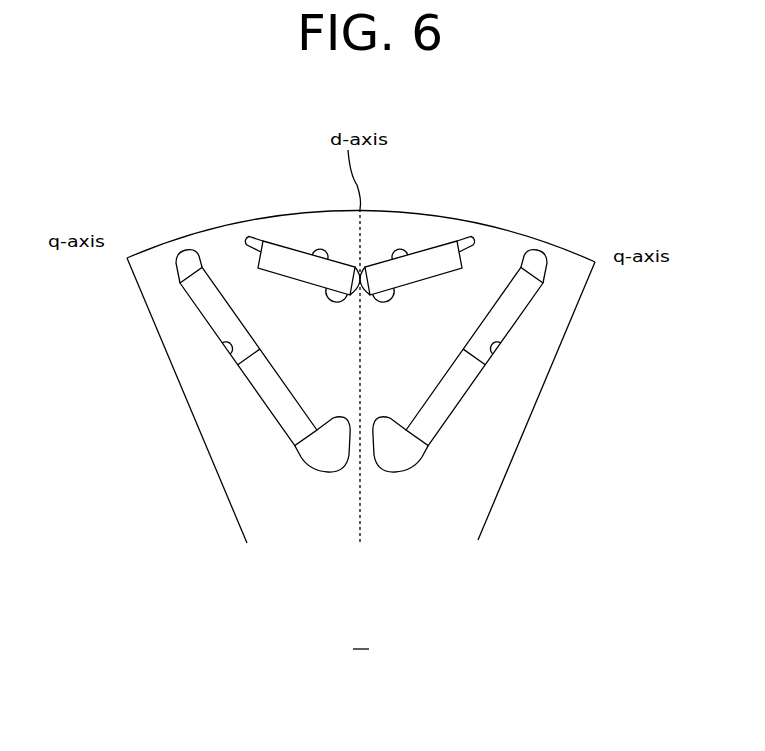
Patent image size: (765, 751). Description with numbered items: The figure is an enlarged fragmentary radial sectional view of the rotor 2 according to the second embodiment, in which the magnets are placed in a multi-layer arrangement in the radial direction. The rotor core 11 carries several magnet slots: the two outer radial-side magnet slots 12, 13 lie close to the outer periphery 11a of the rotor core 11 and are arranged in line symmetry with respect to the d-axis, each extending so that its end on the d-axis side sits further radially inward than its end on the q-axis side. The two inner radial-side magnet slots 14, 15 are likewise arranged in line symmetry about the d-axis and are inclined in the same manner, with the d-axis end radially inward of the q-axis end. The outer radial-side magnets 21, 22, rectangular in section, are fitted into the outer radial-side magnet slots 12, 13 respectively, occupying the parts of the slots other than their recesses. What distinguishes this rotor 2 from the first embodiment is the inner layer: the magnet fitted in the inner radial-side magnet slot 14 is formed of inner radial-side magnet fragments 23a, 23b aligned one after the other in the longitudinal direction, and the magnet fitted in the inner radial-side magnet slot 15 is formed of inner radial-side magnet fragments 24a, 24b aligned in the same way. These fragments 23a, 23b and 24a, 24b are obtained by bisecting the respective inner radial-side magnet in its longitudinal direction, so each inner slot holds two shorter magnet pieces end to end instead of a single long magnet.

The rotor 2 is at (361, 639).
The rotor core 11 is at (288, 520).
The outer periphery 11a is at (460, 218).
The outer radial-side magnet slot 12 is at (320, 254).
The outer radial-side magnet slot 13 is at (393, 260).
The inner radial-side magnet slot 14 is at (232, 364).
The inner radial-side magnet slot 15 is at (488, 362).
The outer radial-side magnet 21 is at (300, 262).
The outer radial-side magnet 22 is at (432, 263).
The inner radial-side magnet fragment 23a is at (220, 316).
The inner radial-side magnet fragment 23b is at (272, 395).
The inner radial-side magnet fragment 24a is at (502, 320).
The inner radial-side magnet fragment 24b is at (448, 400).